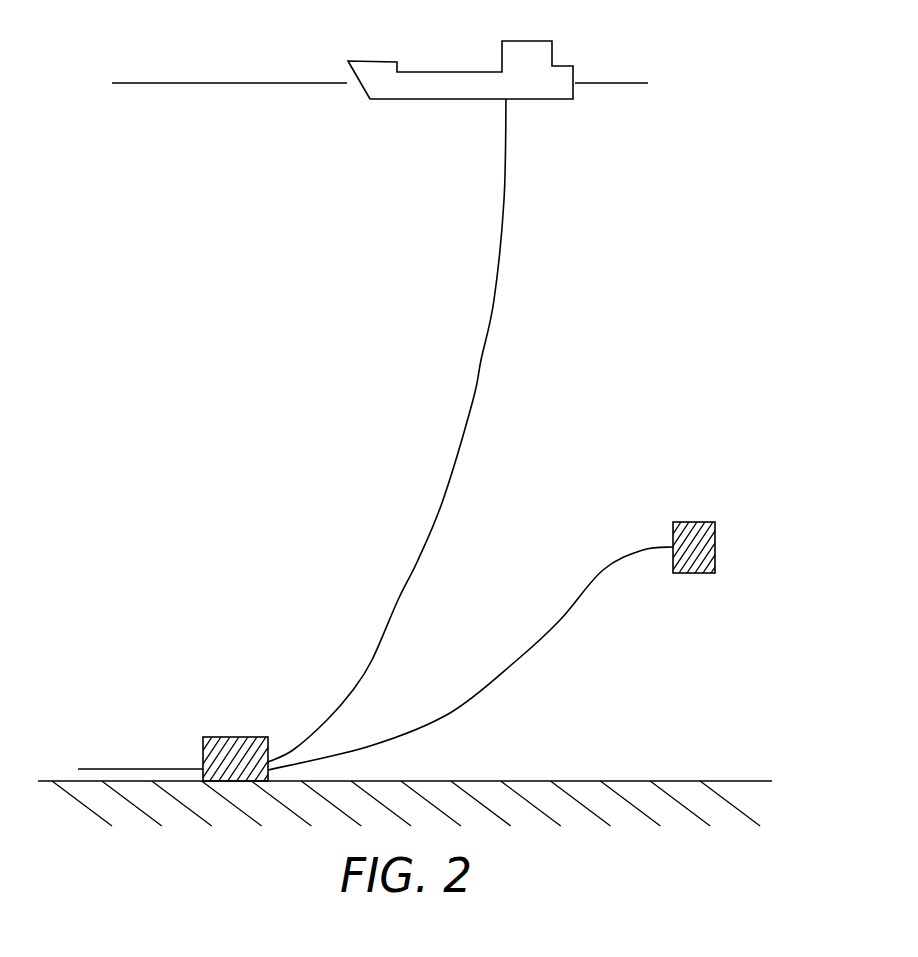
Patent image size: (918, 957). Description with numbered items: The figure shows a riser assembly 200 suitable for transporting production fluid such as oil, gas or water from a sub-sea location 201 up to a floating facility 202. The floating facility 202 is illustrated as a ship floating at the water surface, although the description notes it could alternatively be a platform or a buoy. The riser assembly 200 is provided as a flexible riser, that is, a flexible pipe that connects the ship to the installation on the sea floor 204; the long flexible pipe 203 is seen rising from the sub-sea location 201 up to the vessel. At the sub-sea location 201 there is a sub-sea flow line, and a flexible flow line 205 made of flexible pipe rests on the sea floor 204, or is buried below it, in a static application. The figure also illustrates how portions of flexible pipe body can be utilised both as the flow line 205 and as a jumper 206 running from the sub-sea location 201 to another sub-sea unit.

The riser assembly 200 is at (677, 198).
The sub-sea location 201 is at (234, 737).
The floating facility 202 is at (370, 61).
The riser cable 203 is at (480, 357).
The sea floor 204 is at (671, 781).
The flexible flow line 205 is at (123, 769).
The jumper 206 is at (605, 570).